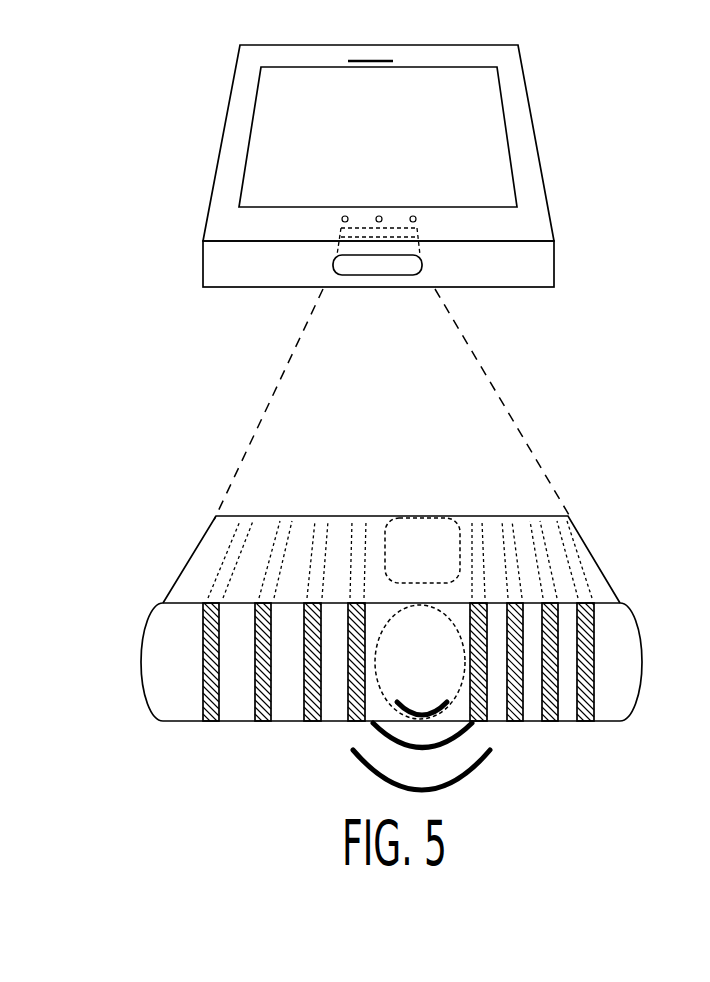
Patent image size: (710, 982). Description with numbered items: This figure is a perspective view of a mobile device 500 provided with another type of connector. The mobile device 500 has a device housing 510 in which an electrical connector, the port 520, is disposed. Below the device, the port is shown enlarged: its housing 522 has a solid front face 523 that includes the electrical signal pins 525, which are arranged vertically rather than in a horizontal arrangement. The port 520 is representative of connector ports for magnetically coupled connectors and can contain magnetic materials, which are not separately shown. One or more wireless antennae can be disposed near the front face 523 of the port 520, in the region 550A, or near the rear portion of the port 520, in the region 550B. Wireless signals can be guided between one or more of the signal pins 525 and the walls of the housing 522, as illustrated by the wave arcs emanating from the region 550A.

The mobile device 500 is at (197, 113).
The device housing 510 is at (530, 103).
The port 520 is at (413, 266).
The housing 522 is at (603, 563).
The front face 523 is at (195, 681).
The electrical signal pins 525 is at (196, 624).
The region 550A is at (450, 666).
The region 550B is at (422, 515).